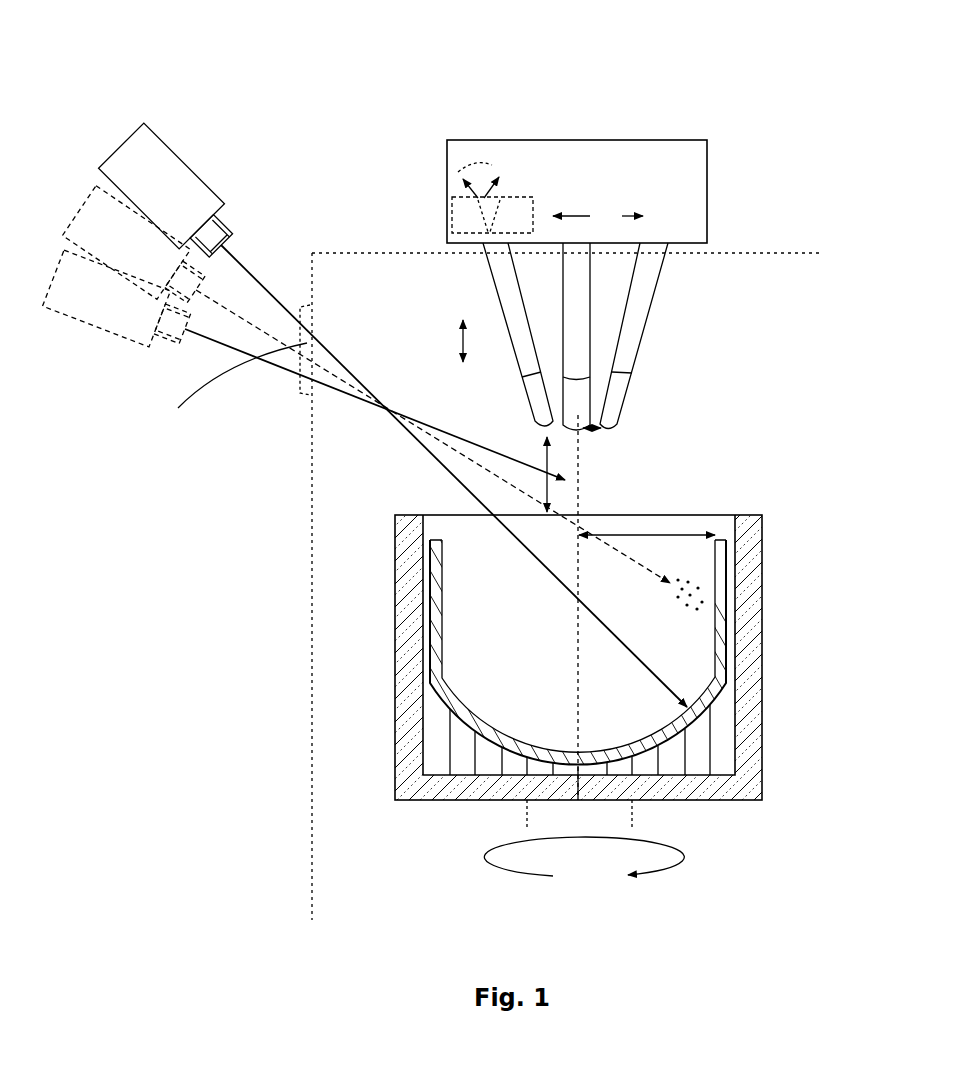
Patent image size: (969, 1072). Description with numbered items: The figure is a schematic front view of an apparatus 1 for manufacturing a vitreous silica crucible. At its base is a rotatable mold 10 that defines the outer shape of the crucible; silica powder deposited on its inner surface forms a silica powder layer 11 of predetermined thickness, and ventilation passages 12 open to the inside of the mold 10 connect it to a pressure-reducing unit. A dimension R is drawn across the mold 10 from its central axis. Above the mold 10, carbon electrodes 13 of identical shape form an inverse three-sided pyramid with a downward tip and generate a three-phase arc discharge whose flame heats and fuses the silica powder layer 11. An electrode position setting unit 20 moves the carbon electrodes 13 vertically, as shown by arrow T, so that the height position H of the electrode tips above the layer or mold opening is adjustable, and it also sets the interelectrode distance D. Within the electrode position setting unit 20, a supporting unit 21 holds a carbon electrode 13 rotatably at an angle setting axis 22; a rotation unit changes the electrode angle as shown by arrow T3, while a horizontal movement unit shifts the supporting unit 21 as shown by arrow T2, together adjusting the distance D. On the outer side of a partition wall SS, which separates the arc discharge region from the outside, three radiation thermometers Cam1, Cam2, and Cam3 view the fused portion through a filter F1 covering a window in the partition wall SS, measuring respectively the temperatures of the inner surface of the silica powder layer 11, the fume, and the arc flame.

The apparatus for manufacturing a vitreous silica crucible 1 is at (419, 93).
The mold 10 is at (765, 785).
The silica powder layer 11 is at (398, 694).
The ventilation passages 12 is at (762, 523).
The carbon electrodes 13 is at (490, 281).
The electrode position setting unit 20 is at (707, 170).
The supporting unit 21 is at (452, 197).
The angle setting axis 22 is at (447, 216).
The radiation thermometer Cam1 is at (162, 147).
The radiation thermometer Cam2 is at (64, 240).
The radiation thermometer Cam3 is at (142, 343).
The filter F1 is at (235, 393).
The partition wall SS is at (312, 752).
The arrow T (vertical electrode movement) T is at (444, 341).
The arrow T2 (horizontal movement of supporting unit) T2 is at (598, 213).
The arrow T3 (electrode angle change) T3 is at (494, 176).
The interelectrode distance D is at (595, 444).
The height position H is at (536, 474).
The mold radius R is at (647, 553).